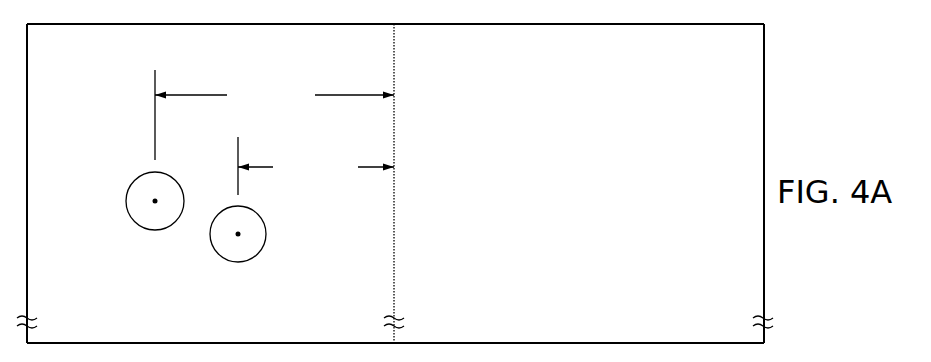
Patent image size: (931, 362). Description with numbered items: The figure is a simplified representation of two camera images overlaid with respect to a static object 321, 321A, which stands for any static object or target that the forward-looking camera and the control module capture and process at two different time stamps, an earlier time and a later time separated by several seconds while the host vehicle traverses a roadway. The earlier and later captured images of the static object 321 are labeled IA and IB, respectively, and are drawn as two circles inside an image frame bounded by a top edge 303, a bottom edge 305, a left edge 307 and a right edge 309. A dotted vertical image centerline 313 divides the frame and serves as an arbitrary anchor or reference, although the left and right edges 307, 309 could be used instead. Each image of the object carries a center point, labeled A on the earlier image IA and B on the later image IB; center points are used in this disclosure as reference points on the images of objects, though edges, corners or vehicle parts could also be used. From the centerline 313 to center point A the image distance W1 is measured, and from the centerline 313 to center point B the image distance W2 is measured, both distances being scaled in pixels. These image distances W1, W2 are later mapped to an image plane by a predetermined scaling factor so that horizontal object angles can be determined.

The top edge 303 is at (540, 25).
The bottom edge 305 is at (451, 343).
The left edge 307 is at (28, 261).
The right edge 309 is at (764, 127).
The vertical image centerline 313 is at (394, 268).
The static object 321 is at (212, 214).
The static object 321A is at (212, 214).
The center point A is at (232, 243).
The center point B is at (145, 210).
The earlier captured image IA is at (257, 264).
The later captured image IB is at (146, 173).
The image distance W1 is at (316, 166).
The image distance W2 is at (274, 115).